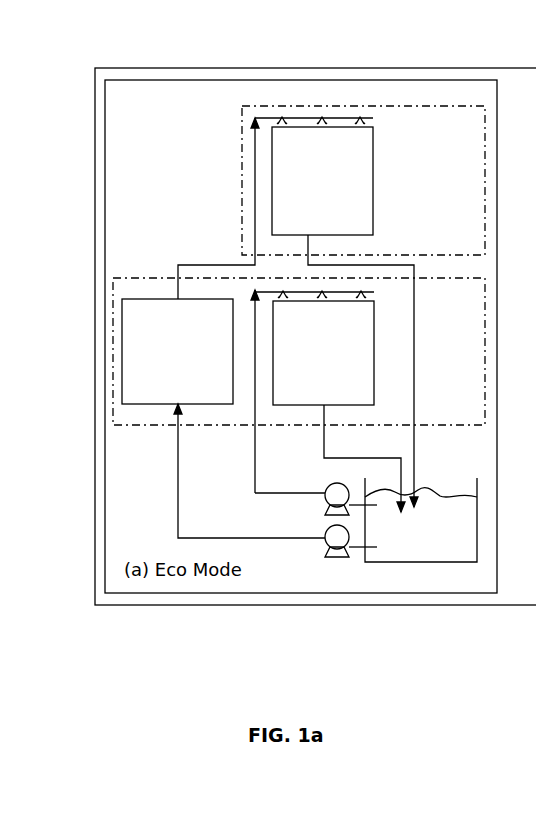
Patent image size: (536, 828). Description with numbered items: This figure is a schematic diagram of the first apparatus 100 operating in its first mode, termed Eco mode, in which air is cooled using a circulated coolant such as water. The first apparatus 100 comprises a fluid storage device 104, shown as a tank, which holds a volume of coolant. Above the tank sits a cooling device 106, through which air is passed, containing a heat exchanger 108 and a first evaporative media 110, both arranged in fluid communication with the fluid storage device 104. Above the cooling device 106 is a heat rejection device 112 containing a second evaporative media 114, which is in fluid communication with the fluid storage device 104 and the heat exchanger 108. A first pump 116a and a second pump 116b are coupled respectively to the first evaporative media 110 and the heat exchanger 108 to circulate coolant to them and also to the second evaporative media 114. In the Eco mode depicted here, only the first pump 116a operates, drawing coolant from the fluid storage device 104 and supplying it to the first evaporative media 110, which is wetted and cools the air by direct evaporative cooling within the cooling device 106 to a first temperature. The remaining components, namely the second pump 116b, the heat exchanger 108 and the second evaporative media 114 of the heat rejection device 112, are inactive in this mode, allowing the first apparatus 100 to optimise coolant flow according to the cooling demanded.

The first apparatus 100 is at (468, 80).
The heat rejection device 112 is at (380, 106).
The second evaporative media 114 is at (272, 165).
The cooling device 106 is at (158, 278).
The heat exchanger 108 is at (122, 350).
The first evaporative media 110 is at (295, 405).
The first pump 116a is at (325, 500).
The second pump 116b is at (330, 540).
The fluid storage device 104 is at (430, 565).